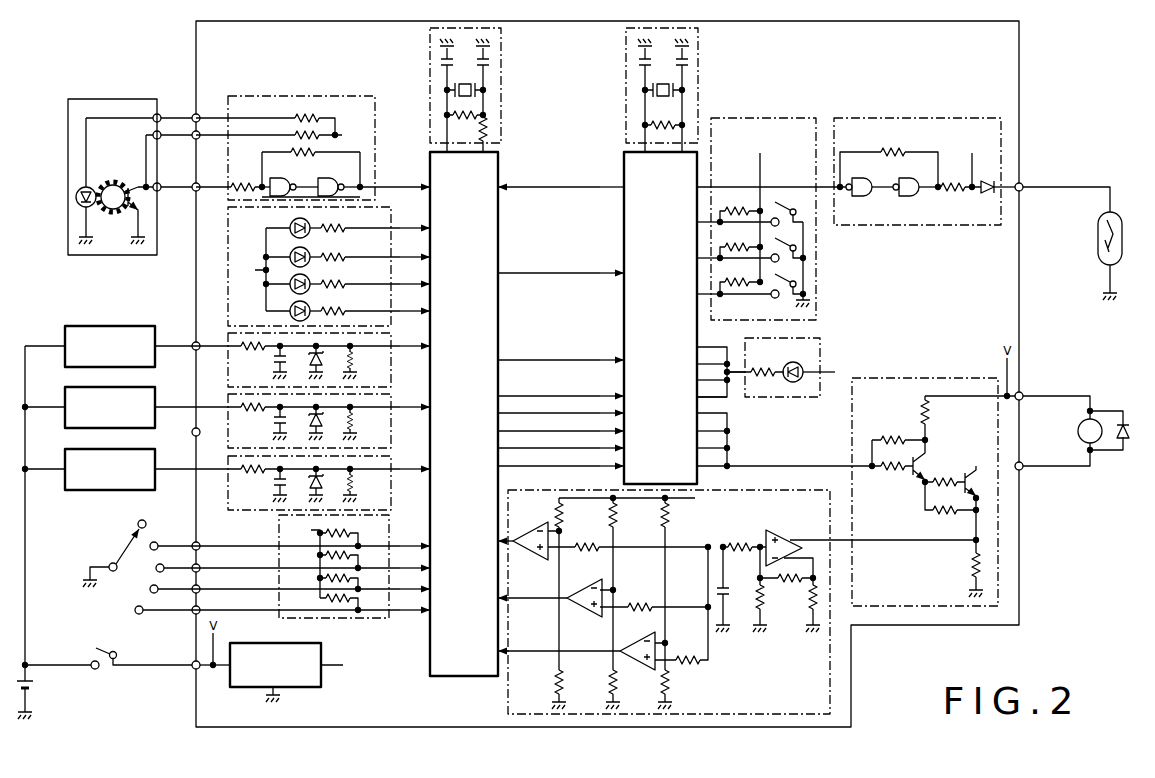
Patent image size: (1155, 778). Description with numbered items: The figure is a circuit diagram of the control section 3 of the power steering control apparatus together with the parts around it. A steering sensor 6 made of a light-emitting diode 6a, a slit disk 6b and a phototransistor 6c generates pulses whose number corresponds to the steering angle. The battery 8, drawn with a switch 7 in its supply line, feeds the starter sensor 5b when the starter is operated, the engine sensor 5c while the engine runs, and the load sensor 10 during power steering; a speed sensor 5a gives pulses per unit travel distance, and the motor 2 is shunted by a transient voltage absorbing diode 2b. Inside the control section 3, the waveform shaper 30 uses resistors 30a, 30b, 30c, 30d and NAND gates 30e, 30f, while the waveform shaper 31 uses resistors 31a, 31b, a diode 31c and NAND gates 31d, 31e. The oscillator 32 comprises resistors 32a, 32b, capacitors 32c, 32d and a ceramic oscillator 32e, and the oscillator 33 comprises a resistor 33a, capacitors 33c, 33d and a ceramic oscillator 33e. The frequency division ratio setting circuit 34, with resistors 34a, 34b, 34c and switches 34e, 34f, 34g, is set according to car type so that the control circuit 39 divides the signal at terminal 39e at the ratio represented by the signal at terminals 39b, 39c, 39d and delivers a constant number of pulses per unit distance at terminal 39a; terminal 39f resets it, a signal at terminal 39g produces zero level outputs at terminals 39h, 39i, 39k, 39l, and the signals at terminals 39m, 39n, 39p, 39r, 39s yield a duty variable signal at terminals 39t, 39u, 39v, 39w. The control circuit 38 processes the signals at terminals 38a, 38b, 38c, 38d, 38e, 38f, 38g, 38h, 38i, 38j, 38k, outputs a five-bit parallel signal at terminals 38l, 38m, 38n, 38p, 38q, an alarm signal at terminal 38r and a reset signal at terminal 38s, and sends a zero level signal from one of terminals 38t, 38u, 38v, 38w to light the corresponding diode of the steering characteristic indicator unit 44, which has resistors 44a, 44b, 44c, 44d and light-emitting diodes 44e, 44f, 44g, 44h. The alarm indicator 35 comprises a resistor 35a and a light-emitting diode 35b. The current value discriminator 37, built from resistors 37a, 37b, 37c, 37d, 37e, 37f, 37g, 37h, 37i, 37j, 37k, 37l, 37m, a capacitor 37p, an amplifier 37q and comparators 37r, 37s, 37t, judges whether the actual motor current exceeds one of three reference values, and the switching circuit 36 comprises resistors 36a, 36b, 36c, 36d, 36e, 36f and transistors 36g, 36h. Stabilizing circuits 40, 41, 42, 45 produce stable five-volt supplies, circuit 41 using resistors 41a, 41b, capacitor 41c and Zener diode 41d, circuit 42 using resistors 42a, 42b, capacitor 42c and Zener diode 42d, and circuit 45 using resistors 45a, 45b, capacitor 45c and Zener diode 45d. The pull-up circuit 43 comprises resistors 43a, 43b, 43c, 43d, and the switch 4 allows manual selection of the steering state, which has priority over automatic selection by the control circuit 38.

The motor 2 is at (1078, 434).
The diode 2b is at (1123, 419).
The control section 3 is at (1019, 62).
The switch 4 is at (121, 550).
The speed sensor 5a is at (1098, 240).
The starter sensor 5b is at (156, 363).
The engine sensor 5c is at (156, 424).
The steering sensor 6 is at (133, 99).
The light-emitting diode 6a is at (88, 185).
The slit disk 6b is at (113, 183).
The phototransistor 6c is at (132, 183).
The power switch 7 is at (103, 652).
The battery 8 is at (37, 685).
The load sensor 10 is at (156, 485).
The waveform shaper 30 is at (342, 96).
The resistor 30a is at (318, 115).
The resistor 30b is at (294, 139).
The resistor 30c is at (305, 155).
The resistor 30d is at (242, 183).
The NAND gate 30e is at (297, 178).
The NAND gate 30f is at (337, 178).
The waveform shaper 31 is at (955, 118).
The resistor 31a is at (888, 149).
The resistor 31b is at (948, 182).
The diode 31c is at (987, 197).
The NAND gate 31d is at (868, 197).
The NAND gate 31e is at (905, 178).
The oscillator 32 is at (503, 50).
The resistor 32a is at (475, 113).
The resistor 32b is at (489, 129).
The capacitor 32c is at (440, 63).
The capacitor 32d is at (490, 62).
The ceramic oscillator 32e is at (465, 82).
The oscillator 33 is at (700, 50).
The resistor 33a is at (673, 120).
The capacitor 33c is at (639, 63).
The capacitor 33d is at (688, 62).
The ceramic oscillator 33e is at (663, 83).
The frequency division ratio setting circuit 34 is at (790, 118).
The resistor 34a is at (737, 208).
The resistor 34b is at (737, 244).
The resistor 34c is at (737, 279).
The switch 34e is at (777, 203).
The switch 34f is at (804, 242).
The switch 34g is at (779, 296).
The alarm indicator 35 is at (822, 336).
The resistor 35a is at (765, 368).
The light-emitting diode 35b is at (787, 380).
The switching circuit 36 is at (940, 378).
The resistor 36a is at (893, 436).
The resistor 36b is at (893, 470).
The resistor 36c is at (930, 408).
The resistor 36d is at (966, 474).
The resistor 36e is at (945, 513).
The resistor 36f is at (971, 567).
The transistor 36g is at (919, 466).
The transistor 36h is at (958, 486).
The current value discriminator 37 is at (741, 490).
The resistor 37a is at (555, 512).
The resistor 37b is at (618, 518).
The resistor 37c is at (674, 527).
The resistor 37d is at (585, 543).
The resistor 37e is at (644, 603).
The resistor 37f is at (554, 680).
The resistor 37g is at (608, 681).
The resistor 37h is at (672, 682).
The resistor 37i is at (686, 656).
The resistor 37j is at (740, 542).
The resistor 37k is at (758, 588).
The resistor 37l is at (790, 584).
The resistor 37m is at (809, 616).
The capacitor 37p is at (726, 597).
The amplifier 37q is at (784, 533).
The comparator 37r is at (523, 558).
The comparator 37s is at (580, 614).
The comparator 37t is at (630, 670).
The control circuit 38 is at (500, 160).
The terminal 38a is at (395, 180).
The terminal 38b is at (549, 180).
The terminal 38c is at (413, 341).
The terminal 38d is at (413, 402).
The terminal 38e is at (413, 540).
The terminal 38f is at (414, 562).
The terminal 38g is at (413, 583).
The terminal 38h is at (413, 604).
The terminal 38i is at (547, 652).
The terminal 38j is at (521, 599).
The terminal 38k is at (493, 541).
The terminal 38l is at (549, 466).
The terminal 38m is at (547, 449).
The terminal 38n is at (548, 432).
The output terminal 38p is at (548, 414).
The terminal 38q is at (548, 397).
The terminal 38r is at (561, 355).
The terminal 38s is at (561, 268).
The terminal 38t is at (415, 221).
The terminal 38u is at (415, 250).
The terminal 38v is at (415, 277).
The terminal 38w is at (415, 304).
The control circuit 39 is at (620, 163).
The terminal 39a is at (611, 178).
The terminal 39b is at (698, 295).
The terminal 39c is at (697, 259).
The terminal 39d is at (698, 223).
The terminal 39e is at (759, 188).
The terminal 39f is at (612, 266).
The terminal 39g is at (612, 353).
The terminal 39h is at (721, 363).
The terminal 39i is at (712, 357).
The terminal 39k is at (712, 373).
The terminal 39l is at (712, 389).
The terminal 39m is at (626, 397).
The terminal 39n is at (625, 414).
The terminal 39p is at (625, 432).
The terminal 39r is at (625, 449).
The terminal 39s is at (625, 467).
The terminal 39t is at (700, 436).
The terminal 39u is at (701, 432).
The terminal 39v is at (701, 449).
The terminal 39w is at (772, 467).
The stabilizing circuit 40 is at (310, 643).
The stabilizing circuit 41 is at (227, 370).
The resistor 41a is at (253, 355).
The resistor 41b is at (356, 364).
The capacitor 41c is at (284, 364).
The Zener diode 41d is at (322, 364).
The stabilizing circuit 42 is at (227, 431).
The resistor 42a is at (253, 416).
The resistor 42b is at (356, 425).
The capacitor 42c is at (284, 425).
The Zener diode 42d is at (322, 425).
The pull-up circuit 43 is at (279, 540).
The resistor 43a is at (352, 531).
The resistor 43b is at (352, 557).
The resistor 43c is at (352, 580).
The resistor 43d is at (352, 600).
The steering characteristic indicator unit 44 is at (380, 207).
The resistor 44a is at (343, 226).
The resistor 44b is at (343, 254).
The resistor 44c is at (343, 281).
The resistor 44d is at (343, 308).
The light-emitting diode 44e is at (290, 222).
The light-emitting diode 44f is at (294, 253).
The light-emitting diode 44g is at (298, 280).
The light-emitting diode 44h is at (298, 307).
The stabilizing circuit 45 is at (227, 510).
The resistor 45a is at (250, 480).
The resistor 45b is at (356, 487).
The capacitor 45c is at (274, 484).
The Zener diode 45d is at (310, 484).